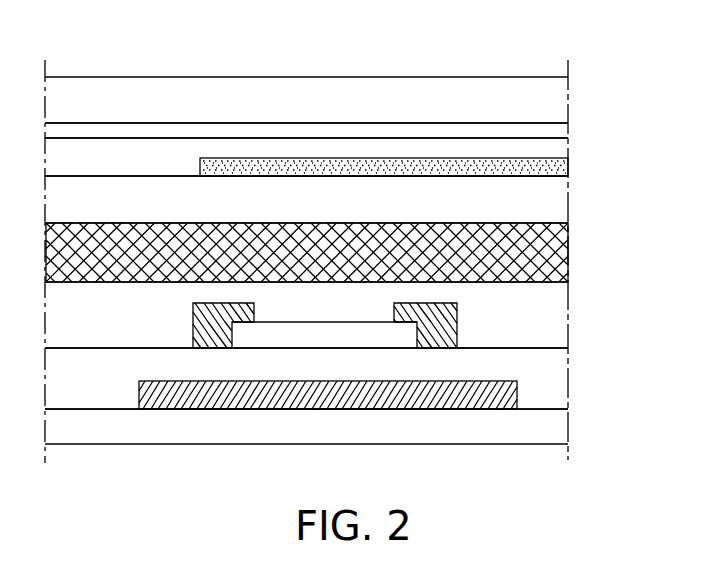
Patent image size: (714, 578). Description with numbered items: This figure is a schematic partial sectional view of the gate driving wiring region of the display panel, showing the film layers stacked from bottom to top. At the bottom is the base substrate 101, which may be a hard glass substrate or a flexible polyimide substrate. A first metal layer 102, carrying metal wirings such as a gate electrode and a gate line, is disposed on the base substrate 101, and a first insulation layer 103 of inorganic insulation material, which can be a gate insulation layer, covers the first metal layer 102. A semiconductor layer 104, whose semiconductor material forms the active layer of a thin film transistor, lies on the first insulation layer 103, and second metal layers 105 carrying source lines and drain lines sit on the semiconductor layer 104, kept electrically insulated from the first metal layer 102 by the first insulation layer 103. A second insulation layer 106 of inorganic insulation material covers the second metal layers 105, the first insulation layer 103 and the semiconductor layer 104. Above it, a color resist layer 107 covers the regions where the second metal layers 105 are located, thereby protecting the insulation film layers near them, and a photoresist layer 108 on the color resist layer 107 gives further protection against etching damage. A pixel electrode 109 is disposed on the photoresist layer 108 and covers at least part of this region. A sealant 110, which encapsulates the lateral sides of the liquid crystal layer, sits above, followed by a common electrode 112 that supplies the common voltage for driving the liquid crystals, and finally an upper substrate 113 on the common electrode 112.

The base substrate 101 is at (567, 427).
The first metal layer 102 is at (517, 392).
The first insulation layer 103 is at (570, 371).
The semiconductor layer 104 is at (344, 343).
The second metal layers 105 is at (457, 336).
The second insulation layer 106 is at (570, 303).
The color resist layer 107 is at (570, 258).
The photoresist layer 108 is at (567, 202).
The pixel electrode 109 is at (568, 167).
The sealant 110 is at (567, 150).
The common electrode 112 is at (567, 132).
The upper substrate 113 is at (567, 105).